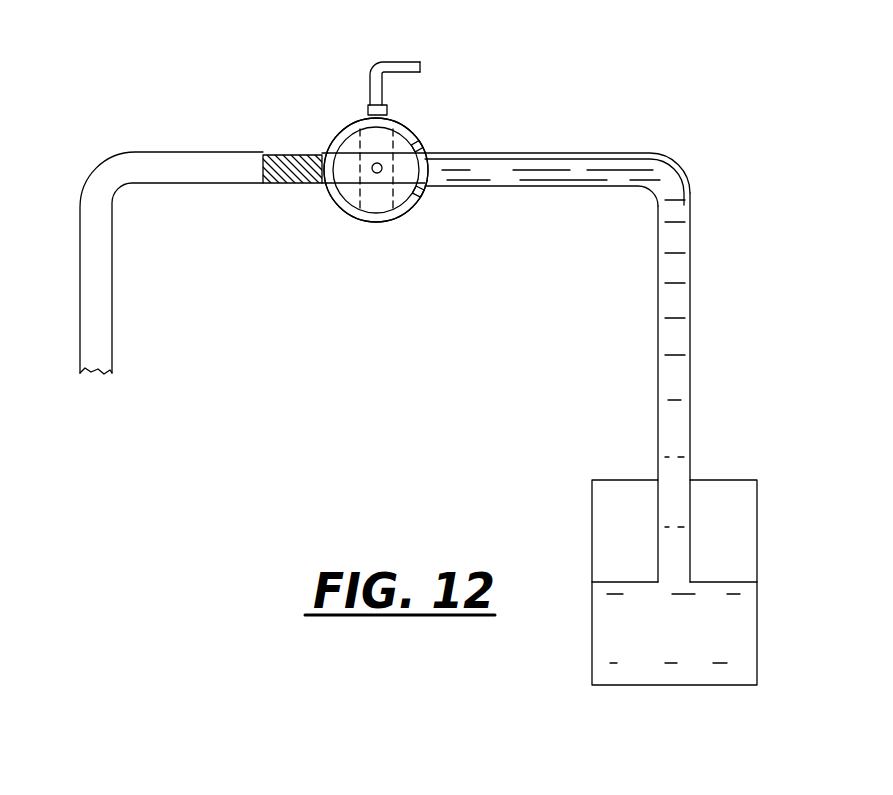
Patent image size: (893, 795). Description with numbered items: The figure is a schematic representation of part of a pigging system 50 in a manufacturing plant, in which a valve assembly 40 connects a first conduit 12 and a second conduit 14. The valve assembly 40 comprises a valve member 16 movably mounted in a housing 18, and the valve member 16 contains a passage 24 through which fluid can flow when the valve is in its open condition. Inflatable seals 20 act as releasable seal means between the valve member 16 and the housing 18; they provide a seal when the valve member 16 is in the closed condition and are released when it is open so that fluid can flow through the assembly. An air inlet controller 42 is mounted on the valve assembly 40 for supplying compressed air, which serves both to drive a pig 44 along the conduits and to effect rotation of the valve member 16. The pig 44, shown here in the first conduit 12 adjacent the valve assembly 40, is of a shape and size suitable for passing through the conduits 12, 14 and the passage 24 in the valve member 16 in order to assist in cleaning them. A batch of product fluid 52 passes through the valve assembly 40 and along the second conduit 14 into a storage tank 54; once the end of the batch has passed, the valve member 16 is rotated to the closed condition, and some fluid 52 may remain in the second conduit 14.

The first conduit 12 is at (209, 155).
The second conduit 14 is at (533, 167).
The valve member 16 is at (345, 187).
The housing 18 is at (405, 217).
The inflatable seal 20 is at (423, 145).
The passage 24 is at (376, 200).
The valve assembly 40 is at (313, 106).
The air inlet controller 42 is at (361, 85).
The pig 44 is at (290, 176).
The pigging system 50 is at (436, 91).
The product fluid 52 is at (680, 217).
The storage tank 54 is at (727, 490).